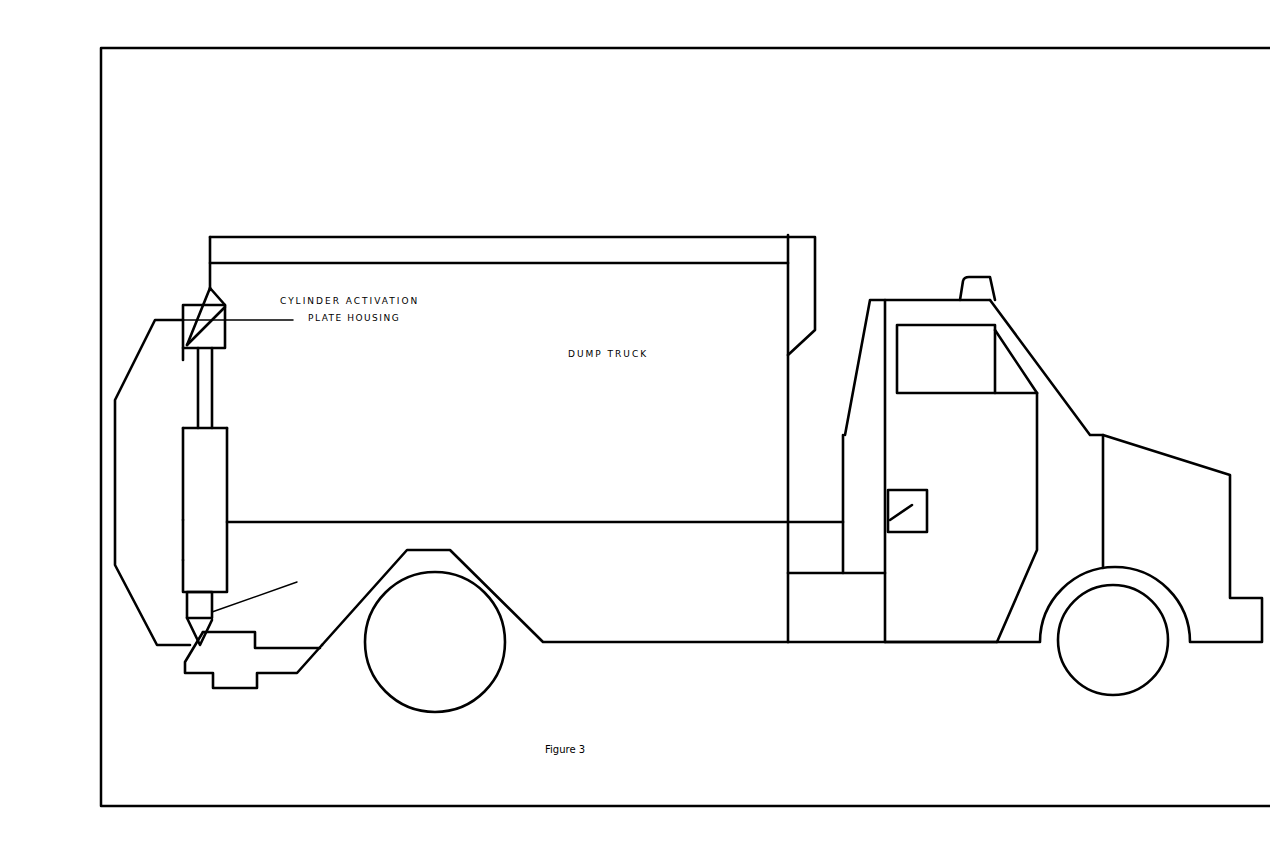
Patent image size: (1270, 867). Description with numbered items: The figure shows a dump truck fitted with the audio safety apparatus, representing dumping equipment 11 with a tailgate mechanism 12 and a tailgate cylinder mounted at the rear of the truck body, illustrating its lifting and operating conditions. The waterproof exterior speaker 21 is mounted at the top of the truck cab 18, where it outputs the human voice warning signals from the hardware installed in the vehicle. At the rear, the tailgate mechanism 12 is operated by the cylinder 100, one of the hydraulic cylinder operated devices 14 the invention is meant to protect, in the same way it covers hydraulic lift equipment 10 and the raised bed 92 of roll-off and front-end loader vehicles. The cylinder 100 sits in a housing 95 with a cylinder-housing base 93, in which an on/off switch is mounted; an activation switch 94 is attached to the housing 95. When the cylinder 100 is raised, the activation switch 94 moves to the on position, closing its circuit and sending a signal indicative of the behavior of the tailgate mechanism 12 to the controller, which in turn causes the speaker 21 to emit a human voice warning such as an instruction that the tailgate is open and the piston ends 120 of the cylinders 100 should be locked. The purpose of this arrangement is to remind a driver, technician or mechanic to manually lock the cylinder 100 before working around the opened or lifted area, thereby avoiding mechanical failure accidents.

The hydraulic lift equipment 10 is at (205, 632).
The dumping equipment 11 is at (706, 588).
The tailgate mechanism 12 is at (155, 320).
The hydraulic cylinder operated devices 14 is at (218, 330).
The cab 18 is at (897, 300).
The waterproof exterior speaker 21 is at (993, 272).
The bed 92 is at (955, 585).
The cylinder-housing base 93 is at (200, 537).
The activation switch 94 is at (210, 288).
The housing 95 is at (229, 442).
The cylinder 100 is at (213, 427).
The piston ends 120 is at (214, 373).